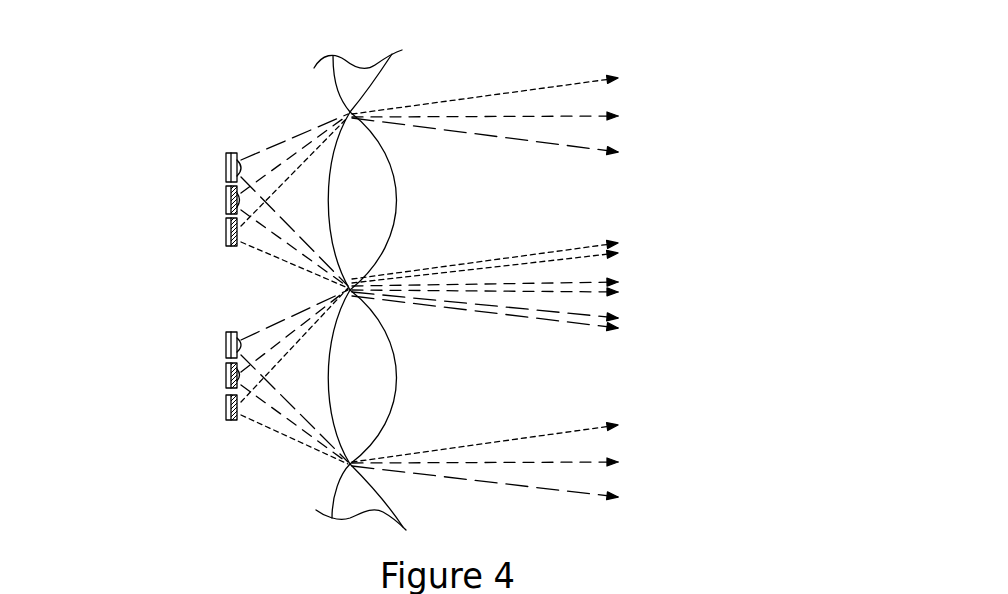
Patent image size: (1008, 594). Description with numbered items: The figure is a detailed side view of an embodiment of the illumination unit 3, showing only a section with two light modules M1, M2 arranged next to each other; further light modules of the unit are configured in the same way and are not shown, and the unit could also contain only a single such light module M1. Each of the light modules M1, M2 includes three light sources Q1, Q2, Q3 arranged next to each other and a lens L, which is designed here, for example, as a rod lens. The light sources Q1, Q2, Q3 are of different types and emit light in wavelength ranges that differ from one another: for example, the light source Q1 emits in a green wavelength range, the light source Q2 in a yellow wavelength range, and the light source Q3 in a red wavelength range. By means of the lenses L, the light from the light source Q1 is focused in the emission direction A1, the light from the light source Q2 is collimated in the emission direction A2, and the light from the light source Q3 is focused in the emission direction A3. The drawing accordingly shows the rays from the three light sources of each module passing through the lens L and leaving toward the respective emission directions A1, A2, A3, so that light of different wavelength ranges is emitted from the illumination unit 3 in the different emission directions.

The illumination unit 3 is at (452, 46).
The lens L is at (364, 214).
The first light module M1 is at (252, 124).
The second light module M2 is at (252, 452).
The first light source Q1 is at (225, 232).
The second light source Q2 is at (225, 196).
The third light source Q3 is at (225, 168).
The first emission direction A1 is at (584, 82).
The second emission direction A2 is at (582, 118).
The third emission direction A3 is at (582, 153).